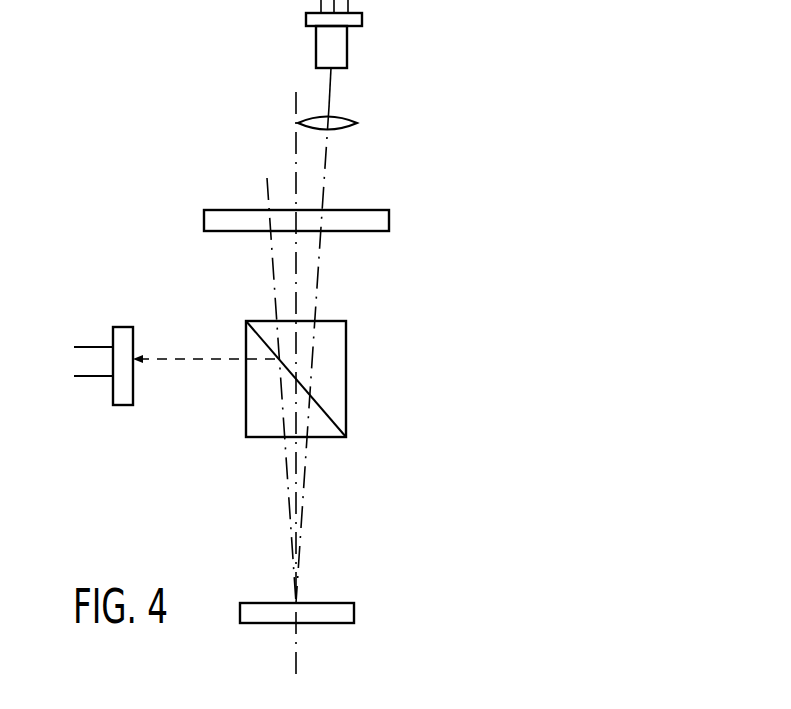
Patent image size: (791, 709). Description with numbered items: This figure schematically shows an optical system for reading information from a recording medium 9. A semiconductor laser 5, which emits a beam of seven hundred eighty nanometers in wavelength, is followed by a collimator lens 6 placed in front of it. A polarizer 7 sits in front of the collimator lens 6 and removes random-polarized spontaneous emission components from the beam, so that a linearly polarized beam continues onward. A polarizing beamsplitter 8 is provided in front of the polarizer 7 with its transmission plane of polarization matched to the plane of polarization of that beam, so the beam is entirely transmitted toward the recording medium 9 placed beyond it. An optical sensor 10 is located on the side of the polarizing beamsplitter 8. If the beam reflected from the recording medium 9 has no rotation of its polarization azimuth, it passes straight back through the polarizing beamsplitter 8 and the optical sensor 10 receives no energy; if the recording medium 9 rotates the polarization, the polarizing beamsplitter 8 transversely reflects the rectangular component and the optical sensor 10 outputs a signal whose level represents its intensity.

The semiconductor laser 5 is at (340, 43).
The collimator lens 6 is at (352, 124).
The polarizer 7 is at (372, 218).
The polarizing beamsplitter 8 is at (333, 363).
The recording medium 9 is at (337, 612).
The optical sensor 10 is at (120, 330).